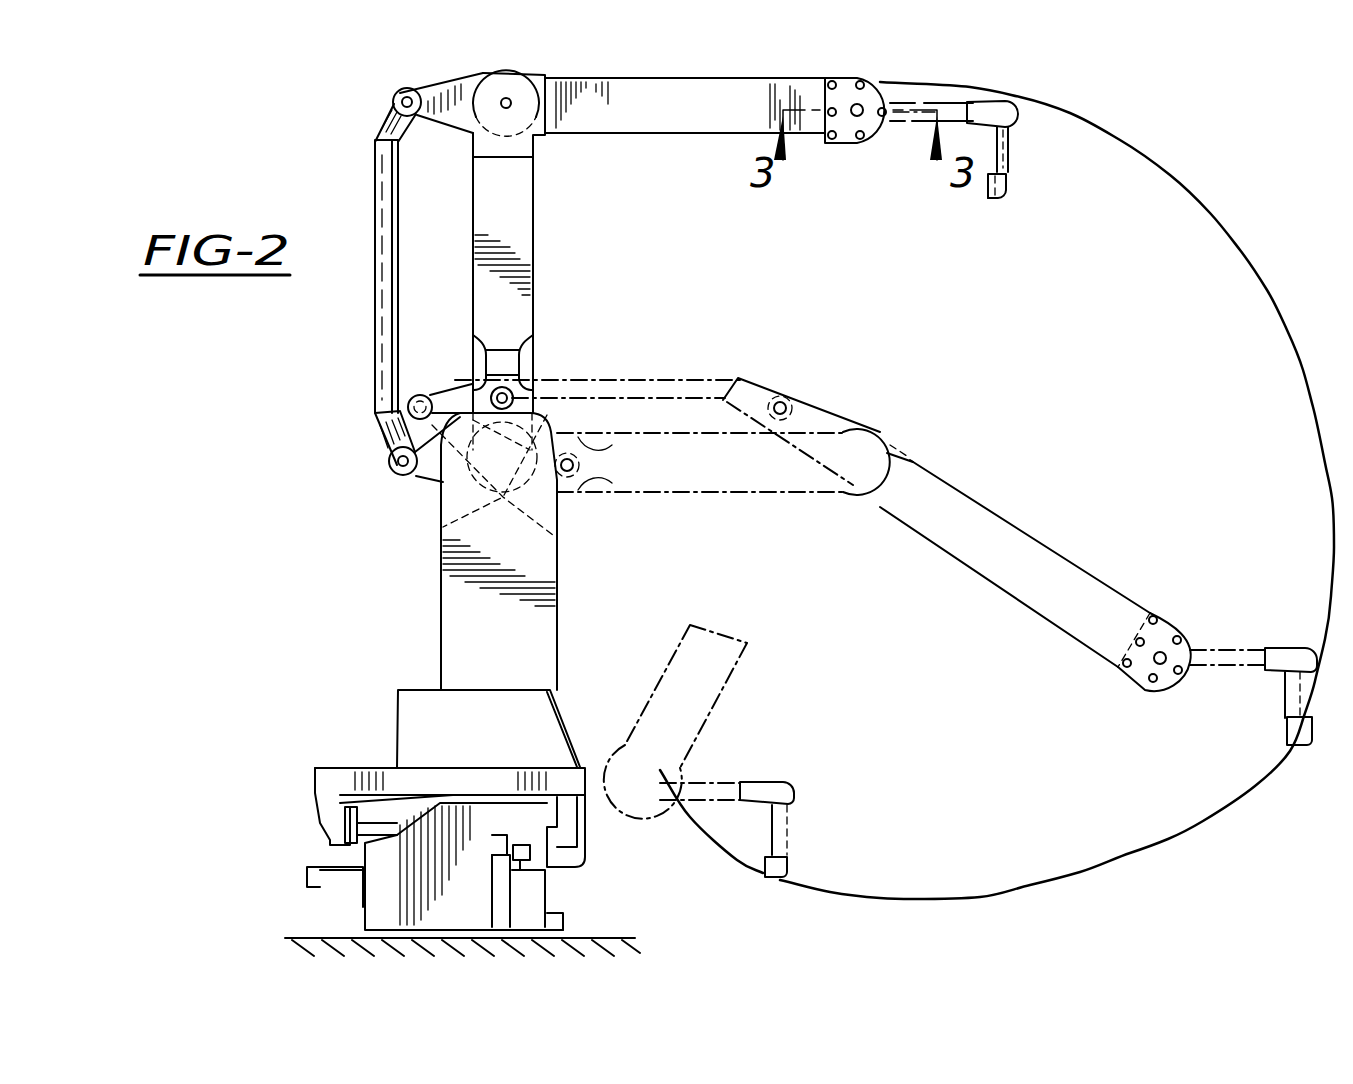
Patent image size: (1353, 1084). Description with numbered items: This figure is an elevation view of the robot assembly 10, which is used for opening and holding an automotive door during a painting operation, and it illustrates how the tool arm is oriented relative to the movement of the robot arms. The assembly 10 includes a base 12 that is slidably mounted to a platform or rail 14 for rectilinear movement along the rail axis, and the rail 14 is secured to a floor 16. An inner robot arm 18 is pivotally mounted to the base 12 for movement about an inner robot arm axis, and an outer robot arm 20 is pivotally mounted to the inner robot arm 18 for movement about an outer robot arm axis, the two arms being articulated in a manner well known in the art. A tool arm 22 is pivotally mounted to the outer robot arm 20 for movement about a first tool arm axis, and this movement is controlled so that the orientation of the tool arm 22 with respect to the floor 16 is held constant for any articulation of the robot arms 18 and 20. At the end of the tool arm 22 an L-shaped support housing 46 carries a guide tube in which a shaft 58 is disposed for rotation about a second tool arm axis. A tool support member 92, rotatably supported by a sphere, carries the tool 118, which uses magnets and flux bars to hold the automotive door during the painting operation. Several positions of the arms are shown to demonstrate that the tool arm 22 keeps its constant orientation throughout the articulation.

The robot assembly 10 is at (356, 140).
The base 12 is at (440, 613).
The rail 14 is at (362, 907).
The floor 16 is at (600, 933).
The inner robot arm 18 is at (533, 273).
The outer robot arm 20 is at (647, 133).
The tool arm 22 is at (906, 126).
The L-shaped support housing 46 is at (1025, 121).
The shaft 58 is at (1013, 148).
The tool support member 92 is at (1018, 188).
The tool 118 is at (988, 204).